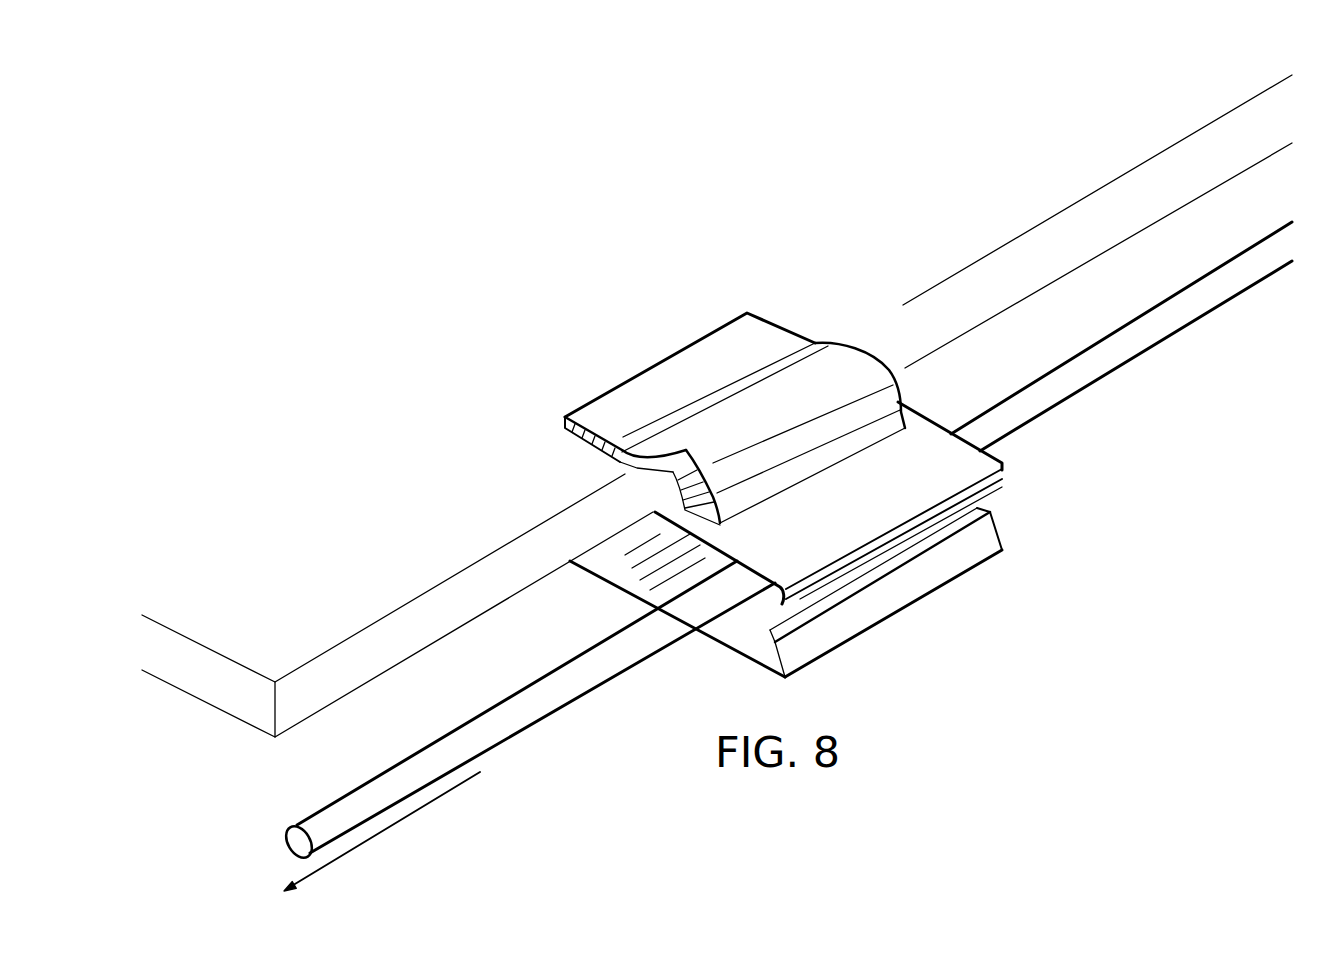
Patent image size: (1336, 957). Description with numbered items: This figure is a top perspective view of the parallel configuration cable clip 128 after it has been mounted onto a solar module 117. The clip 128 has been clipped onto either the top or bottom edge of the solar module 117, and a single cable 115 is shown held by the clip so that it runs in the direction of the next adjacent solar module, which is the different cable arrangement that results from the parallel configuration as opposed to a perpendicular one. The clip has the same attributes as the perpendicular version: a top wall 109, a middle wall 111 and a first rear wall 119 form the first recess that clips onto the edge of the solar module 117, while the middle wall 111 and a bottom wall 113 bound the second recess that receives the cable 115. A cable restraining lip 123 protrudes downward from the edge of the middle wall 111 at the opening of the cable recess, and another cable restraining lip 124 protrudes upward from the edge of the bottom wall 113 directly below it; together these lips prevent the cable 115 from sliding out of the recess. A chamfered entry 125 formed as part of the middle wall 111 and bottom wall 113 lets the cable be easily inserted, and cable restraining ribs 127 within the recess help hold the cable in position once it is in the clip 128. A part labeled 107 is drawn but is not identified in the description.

The upper jaw / top plate of clip 107 is at (587, 430).
The top wall 109 is at (750, 352).
The middle wall 111 is at (882, 523).
The bottom wall 113 is at (617, 585).
The cable 115 is at (1075, 372).
The solar module 117 is at (335, 538).
The first rear wall 119 is at (697, 490).
The cable restraining lip 123 is at (760, 617).
The cable restraining lip 124 is at (724, 633).
The chamfered entry 125 is at (990, 532).
The cable restraining ribs 127 is at (668, 547).
The parallel configuration cable clip 128 is at (618, 282).